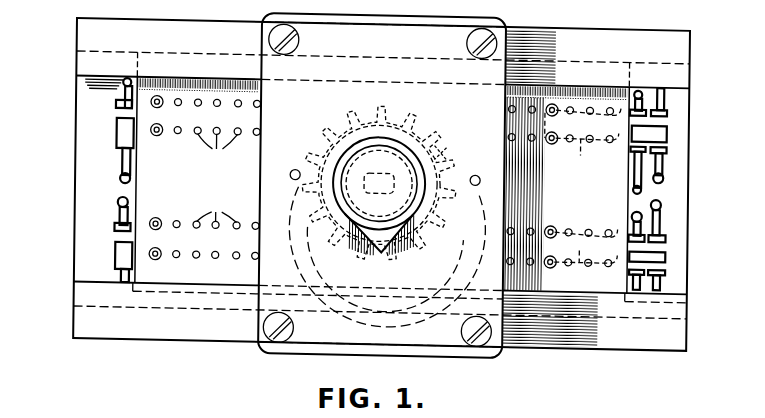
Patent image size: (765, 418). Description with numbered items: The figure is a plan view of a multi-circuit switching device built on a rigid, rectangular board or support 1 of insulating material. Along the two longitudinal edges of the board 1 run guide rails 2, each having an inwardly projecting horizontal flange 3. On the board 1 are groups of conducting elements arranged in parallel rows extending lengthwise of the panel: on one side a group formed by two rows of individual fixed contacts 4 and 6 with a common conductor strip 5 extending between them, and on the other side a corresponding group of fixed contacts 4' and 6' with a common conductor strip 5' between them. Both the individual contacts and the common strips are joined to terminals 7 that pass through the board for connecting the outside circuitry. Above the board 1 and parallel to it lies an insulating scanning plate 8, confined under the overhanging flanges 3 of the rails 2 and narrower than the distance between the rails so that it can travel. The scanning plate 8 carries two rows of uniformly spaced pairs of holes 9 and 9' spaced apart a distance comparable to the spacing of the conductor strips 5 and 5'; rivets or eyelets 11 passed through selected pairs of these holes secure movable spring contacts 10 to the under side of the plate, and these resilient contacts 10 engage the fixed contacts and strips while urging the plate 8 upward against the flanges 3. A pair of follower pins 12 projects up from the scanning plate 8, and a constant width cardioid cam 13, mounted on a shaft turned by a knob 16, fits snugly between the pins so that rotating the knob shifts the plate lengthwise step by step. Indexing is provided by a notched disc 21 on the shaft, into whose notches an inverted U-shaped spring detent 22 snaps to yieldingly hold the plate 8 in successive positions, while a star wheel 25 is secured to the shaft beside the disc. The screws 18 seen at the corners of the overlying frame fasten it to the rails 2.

The board, panel or support 1 is at (85, 150).
The guide rails 2 is at (93, 38).
The horizontal flanges 3 is at (218, 70).
The fixed contacts 4 is at (395, 98).
The fixed contacts 4' is at (395, 222).
The common conductor strip 5 is at (396, 153).
The common conductor strip 5' is at (410, 264).
The fixed contacts 6 is at (667, 169).
The fixed contacts 6' is at (667, 280).
The terminals 7 is at (122, 183).
The scanning plate 8 is at (199, 271).
The holes or perforations 9 is at (217, 150).
The wire connections 9' is at (217, 212).
The movable spring contacts 10 is at (587, 140).
The rivets or eyelets 11 is at (160, 134).
The follower pins 12 is at (297, 165).
The constant width cam 13 is at (453, 274).
The knob 16 is at (358, 178).
The mounting screws 18 is at (283, 333).
The disc 21 is at (442, 144).
The spring detent 22 is at (423, 108).
The star wheel 25 is at (395, 242).